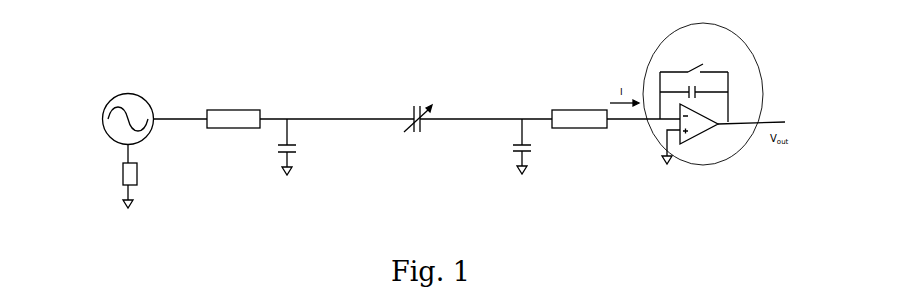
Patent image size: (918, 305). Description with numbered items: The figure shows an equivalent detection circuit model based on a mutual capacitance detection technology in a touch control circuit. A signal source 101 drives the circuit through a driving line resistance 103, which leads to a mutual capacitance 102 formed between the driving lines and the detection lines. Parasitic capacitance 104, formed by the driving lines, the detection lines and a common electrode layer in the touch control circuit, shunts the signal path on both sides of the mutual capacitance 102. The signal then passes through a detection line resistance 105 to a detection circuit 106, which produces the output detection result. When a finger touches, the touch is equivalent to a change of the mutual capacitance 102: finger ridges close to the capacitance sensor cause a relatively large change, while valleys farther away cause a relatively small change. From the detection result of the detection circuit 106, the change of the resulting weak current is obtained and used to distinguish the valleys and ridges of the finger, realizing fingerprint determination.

The signal source 101 is at (121, 111).
The mutual capacitance 102 is at (412, 83).
The driving line resistance 103 is at (233, 130).
The parasitic capacitance 104 is at (515, 148).
The detection line resistance 105 is at (582, 129).
The detection circuit 106 is at (733, 122).